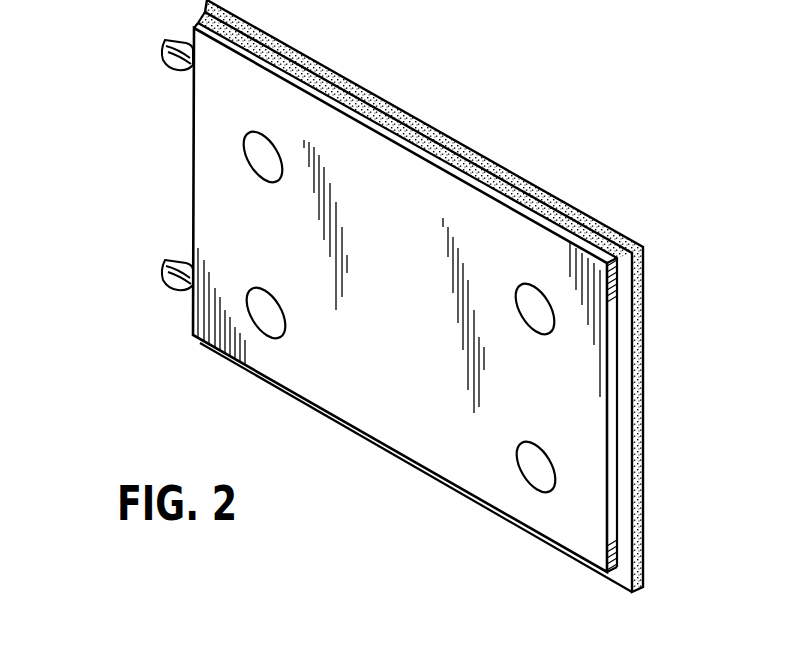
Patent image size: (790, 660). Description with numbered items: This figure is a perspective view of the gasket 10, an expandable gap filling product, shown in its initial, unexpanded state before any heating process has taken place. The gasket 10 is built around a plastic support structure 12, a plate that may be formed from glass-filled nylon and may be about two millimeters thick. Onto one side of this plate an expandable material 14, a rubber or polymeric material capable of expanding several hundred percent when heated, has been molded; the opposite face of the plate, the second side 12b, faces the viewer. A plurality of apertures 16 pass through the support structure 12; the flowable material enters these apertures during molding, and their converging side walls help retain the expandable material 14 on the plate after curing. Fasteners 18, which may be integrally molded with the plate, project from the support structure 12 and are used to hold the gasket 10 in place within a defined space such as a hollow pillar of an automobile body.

The gasket 10 is at (134, 367).
The support structure 12 is at (192, 173).
The second side 12b is at (394, 276).
The expandable material 14 is at (558, 194).
The apertures 16 is at (258, 136).
The fasteners 18 is at (173, 42).